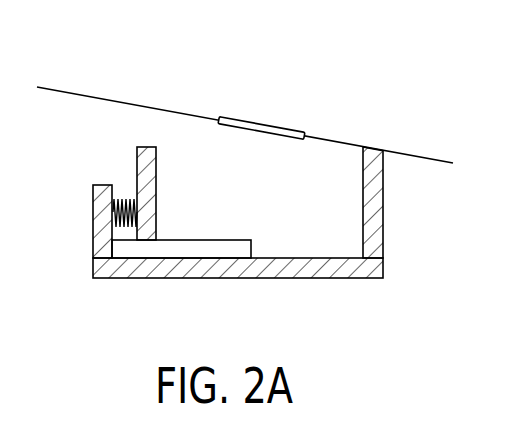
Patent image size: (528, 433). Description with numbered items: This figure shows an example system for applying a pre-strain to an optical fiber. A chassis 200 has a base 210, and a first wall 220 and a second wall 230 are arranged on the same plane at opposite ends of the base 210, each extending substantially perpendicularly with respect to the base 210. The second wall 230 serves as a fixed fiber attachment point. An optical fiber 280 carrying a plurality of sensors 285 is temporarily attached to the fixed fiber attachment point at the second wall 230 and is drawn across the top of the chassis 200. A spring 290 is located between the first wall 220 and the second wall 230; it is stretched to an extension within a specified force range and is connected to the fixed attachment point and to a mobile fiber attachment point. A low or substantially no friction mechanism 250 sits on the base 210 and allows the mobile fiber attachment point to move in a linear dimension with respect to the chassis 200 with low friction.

The chassis 200 is at (434, 191).
The base 210 is at (292, 276).
The first wall 220 is at (106, 206).
The second wall 230 is at (377, 218).
The low or substantially no friction mechanism 250 is at (205, 247).
The optical fiber 280 is at (152, 108).
The sensor 285 is at (277, 124).
The spring 290 is at (128, 199).